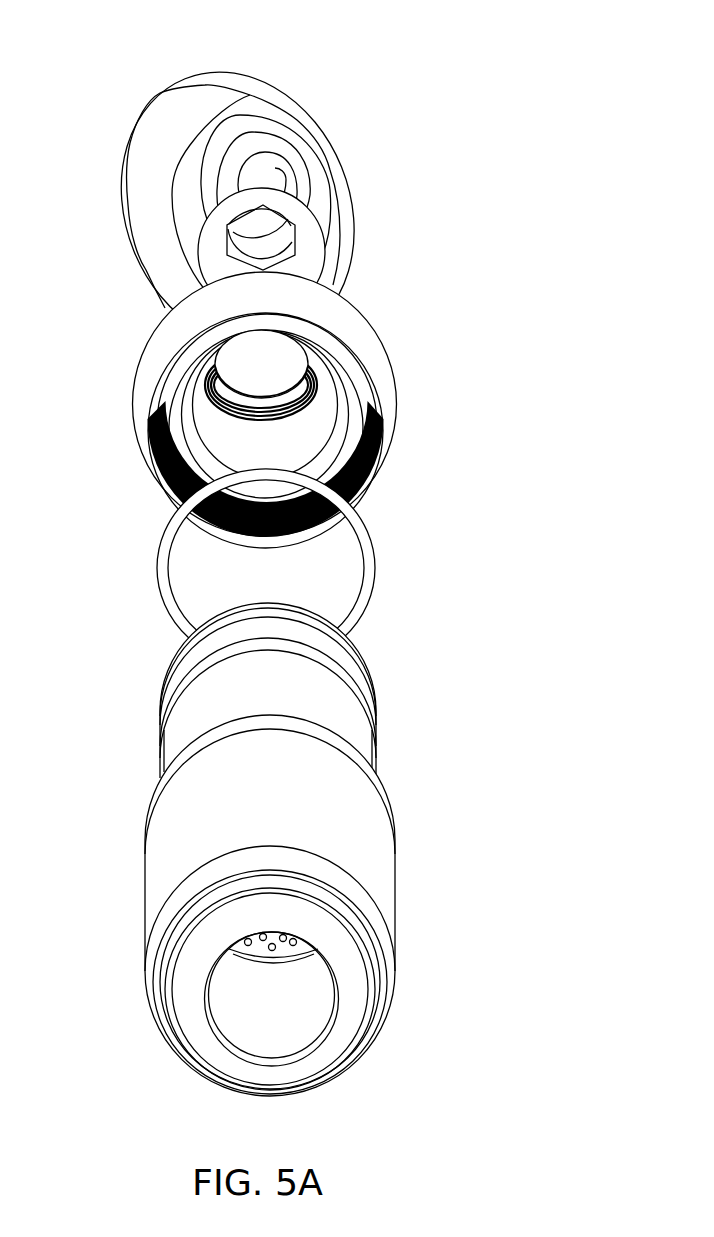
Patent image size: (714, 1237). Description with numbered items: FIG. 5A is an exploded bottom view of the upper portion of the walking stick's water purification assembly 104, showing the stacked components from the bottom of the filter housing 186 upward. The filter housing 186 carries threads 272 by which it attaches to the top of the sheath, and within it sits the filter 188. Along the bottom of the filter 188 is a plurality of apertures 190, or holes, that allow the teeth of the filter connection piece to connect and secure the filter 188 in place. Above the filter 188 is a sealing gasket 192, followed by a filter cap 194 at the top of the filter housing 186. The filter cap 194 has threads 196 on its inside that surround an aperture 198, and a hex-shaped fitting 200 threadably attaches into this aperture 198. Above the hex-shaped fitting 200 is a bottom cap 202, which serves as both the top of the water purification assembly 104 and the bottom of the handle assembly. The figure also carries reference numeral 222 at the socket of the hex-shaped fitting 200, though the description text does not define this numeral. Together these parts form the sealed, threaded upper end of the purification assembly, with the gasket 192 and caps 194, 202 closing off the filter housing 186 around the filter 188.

The water purification assembly 104 is at (483, 157).
The filter housing 186 is at (378, 853).
The filter 188 is at (350, 727).
The apertures 190 is at (272, 950).
The sealing gasket 192 is at (367, 575).
The filter cap 194 is at (150, 348).
The threads 196 is at (316, 395).
The aperture 198 is at (277, 374).
The hex-shaped fitting 200 is at (308, 253).
The bottom cap 202 is at (127, 156).
The hex socket 222 is at (286, 218).
The threads 272 is at (165, 984).